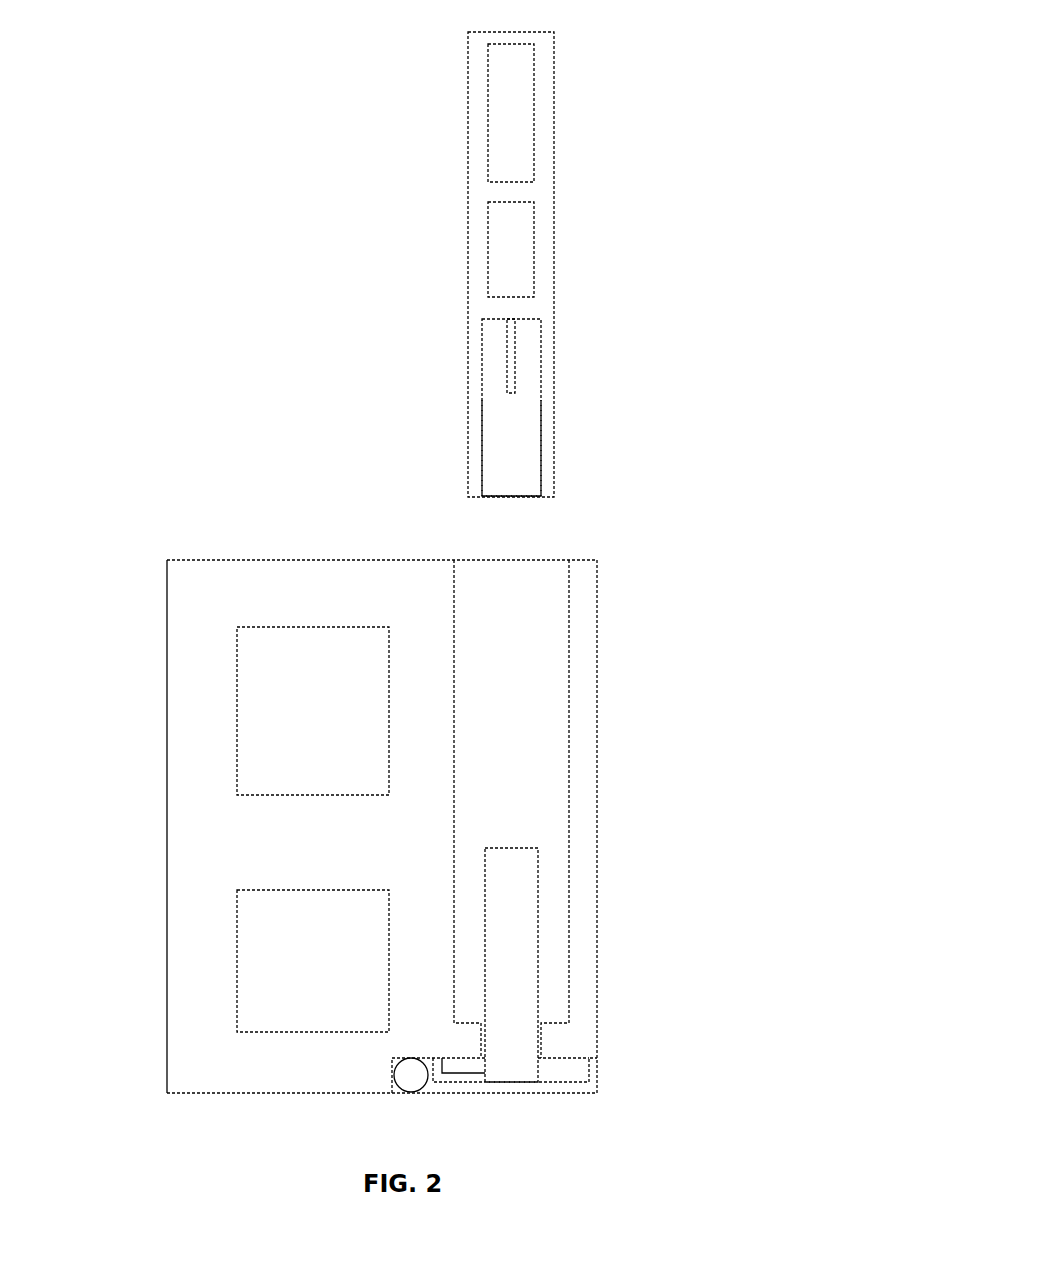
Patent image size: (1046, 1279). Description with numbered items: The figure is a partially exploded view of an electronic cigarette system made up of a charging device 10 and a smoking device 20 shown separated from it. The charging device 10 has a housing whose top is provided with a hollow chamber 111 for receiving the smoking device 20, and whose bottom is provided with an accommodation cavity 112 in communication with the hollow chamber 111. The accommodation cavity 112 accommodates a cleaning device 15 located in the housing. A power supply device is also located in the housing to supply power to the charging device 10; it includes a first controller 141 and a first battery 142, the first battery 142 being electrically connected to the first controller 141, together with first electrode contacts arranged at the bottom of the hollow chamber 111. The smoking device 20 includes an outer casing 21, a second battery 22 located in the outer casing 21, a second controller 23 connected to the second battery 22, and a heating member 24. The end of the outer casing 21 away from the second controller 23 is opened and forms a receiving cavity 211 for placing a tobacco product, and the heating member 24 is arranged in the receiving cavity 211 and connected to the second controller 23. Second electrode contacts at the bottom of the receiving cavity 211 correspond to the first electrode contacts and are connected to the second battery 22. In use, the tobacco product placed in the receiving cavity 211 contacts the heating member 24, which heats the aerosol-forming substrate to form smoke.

The charging device 10 is at (599, 863).
The hollow chamber 111 is at (542, 730).
The accommodation cavity 112 is at (540, 1043).
The first controller 141 is at (273, 993).
The first battery 142 is at (285, 730).
The cleaning device 15 is at (520, 995).
The smoking device 20 is at (557, 315).
The outer casing 21 is at (556, 408).
The receiving cavity 211 is at (523, 473).
The second battery 22 is at (508, 126).
The second controller 23 is at (512, 247).
The heating member 24 is at (513, 378).